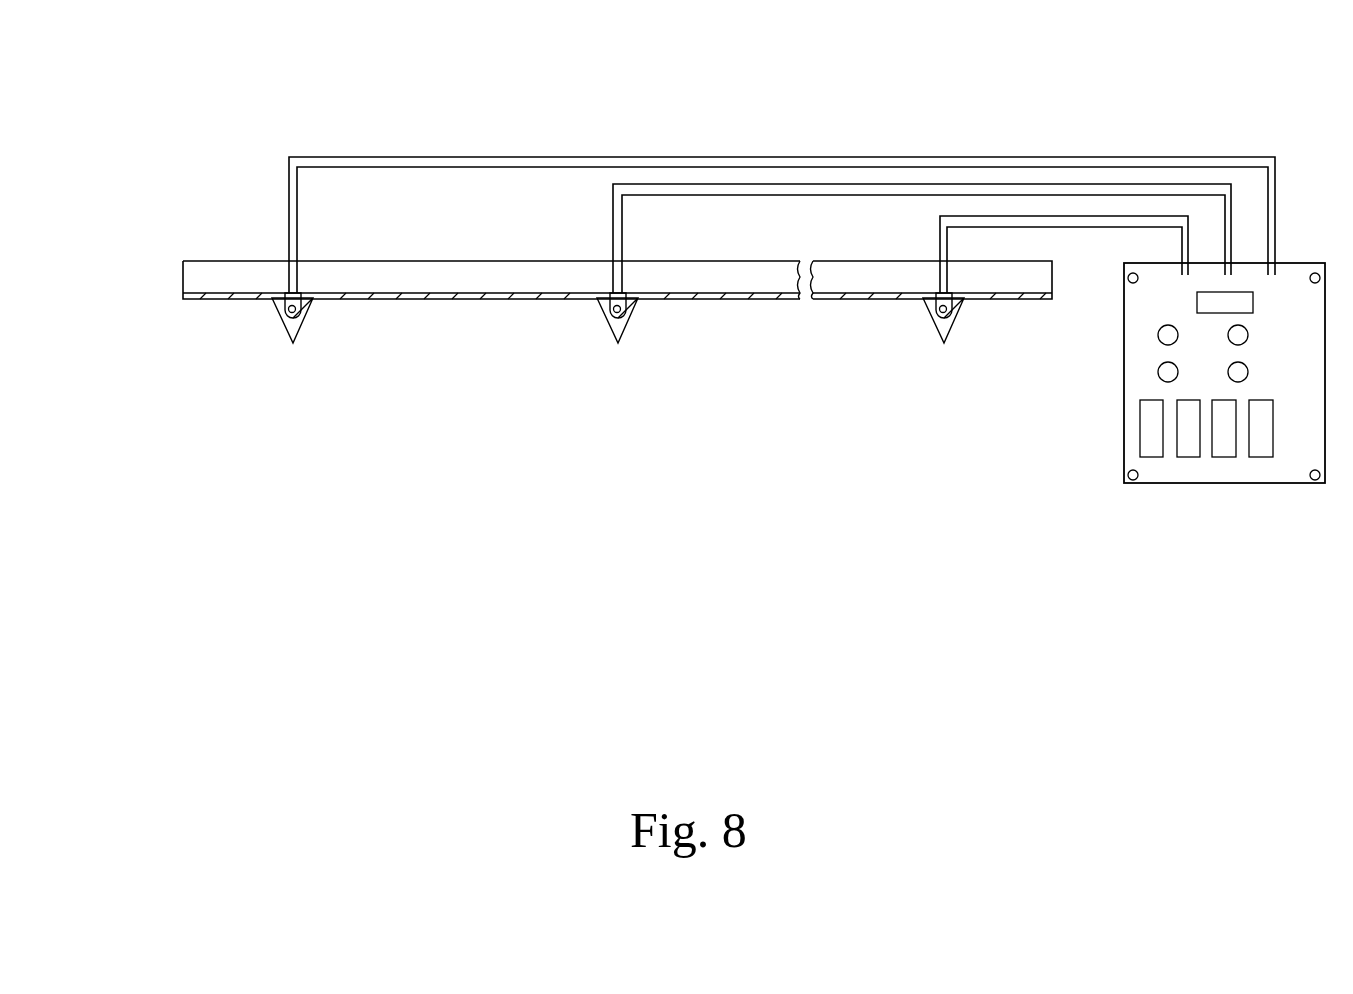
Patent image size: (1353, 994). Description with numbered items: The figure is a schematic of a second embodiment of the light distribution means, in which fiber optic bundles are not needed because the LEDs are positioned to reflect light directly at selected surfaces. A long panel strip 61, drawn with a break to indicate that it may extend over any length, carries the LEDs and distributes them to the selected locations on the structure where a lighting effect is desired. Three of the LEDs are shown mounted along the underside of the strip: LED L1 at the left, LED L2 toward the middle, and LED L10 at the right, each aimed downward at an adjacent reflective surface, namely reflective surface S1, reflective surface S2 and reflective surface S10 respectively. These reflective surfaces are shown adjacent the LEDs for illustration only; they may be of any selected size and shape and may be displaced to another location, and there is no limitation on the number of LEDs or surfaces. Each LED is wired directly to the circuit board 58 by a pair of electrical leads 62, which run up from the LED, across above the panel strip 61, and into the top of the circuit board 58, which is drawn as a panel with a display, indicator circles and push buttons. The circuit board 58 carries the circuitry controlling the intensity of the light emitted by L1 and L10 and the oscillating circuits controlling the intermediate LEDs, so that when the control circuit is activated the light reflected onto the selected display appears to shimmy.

The panel strip 61 is at (227, 277).
The electrical leads 62 is at (990, 222).
The circuit board 58 is at (1267, 487).
The LED L1 is at (287, 300).
The LED L2 is at (618, 303).
The LED L10 is at (942, 307).
The reflective surface S1 is at (297, 343).
The reflective surface S2 is at (623, 347).
The reflective surface S10 is at (948, 345).